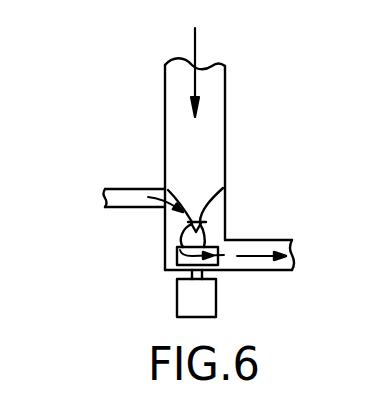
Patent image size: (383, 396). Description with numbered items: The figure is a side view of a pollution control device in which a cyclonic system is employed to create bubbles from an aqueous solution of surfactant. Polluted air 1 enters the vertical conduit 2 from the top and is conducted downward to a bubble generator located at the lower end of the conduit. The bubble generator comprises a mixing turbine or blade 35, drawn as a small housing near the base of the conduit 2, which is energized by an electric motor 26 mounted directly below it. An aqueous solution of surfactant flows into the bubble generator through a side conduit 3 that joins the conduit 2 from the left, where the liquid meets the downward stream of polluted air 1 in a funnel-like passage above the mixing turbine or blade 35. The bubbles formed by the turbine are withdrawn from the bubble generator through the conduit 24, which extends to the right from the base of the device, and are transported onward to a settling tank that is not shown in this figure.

The polluted air 1 is at (195, 47).
The conduit 2 is at (155, 104).
The conduit 3 is at (92, 201).
The conduit 24 is at (292, 233).
The mixing turbine or blade 35 is at (153, 262).
The electric motor 26 is at (230, 297).